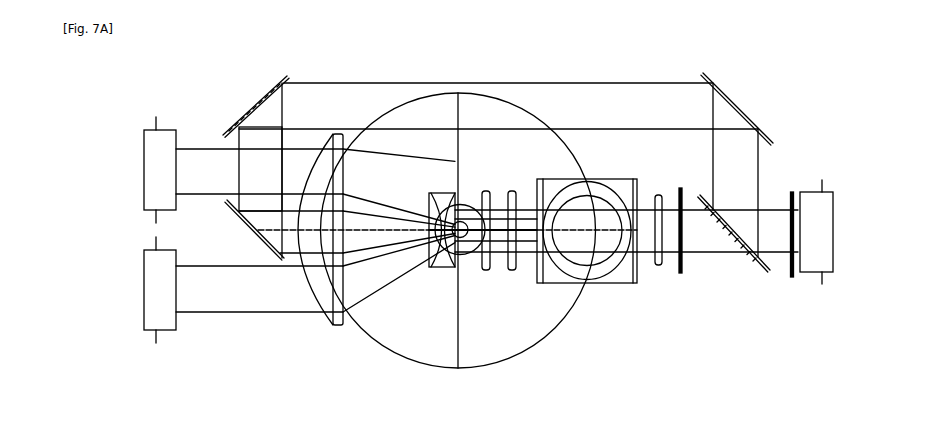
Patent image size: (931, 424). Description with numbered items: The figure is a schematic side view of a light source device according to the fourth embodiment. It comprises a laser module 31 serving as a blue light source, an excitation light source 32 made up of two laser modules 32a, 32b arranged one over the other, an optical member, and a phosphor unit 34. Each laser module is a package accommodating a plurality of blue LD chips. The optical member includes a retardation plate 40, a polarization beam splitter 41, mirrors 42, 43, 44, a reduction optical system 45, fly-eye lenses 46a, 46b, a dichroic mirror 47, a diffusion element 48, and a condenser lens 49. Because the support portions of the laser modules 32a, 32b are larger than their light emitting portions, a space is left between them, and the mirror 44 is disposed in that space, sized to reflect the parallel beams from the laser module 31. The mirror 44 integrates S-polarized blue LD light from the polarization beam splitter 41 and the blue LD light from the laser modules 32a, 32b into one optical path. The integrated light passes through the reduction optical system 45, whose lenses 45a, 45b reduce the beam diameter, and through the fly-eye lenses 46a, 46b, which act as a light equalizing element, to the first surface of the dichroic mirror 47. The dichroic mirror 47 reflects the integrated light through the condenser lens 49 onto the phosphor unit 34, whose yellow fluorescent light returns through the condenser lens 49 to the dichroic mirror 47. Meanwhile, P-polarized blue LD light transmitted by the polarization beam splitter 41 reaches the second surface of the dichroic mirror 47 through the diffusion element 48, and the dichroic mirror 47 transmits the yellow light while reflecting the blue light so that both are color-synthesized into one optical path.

The laser module 31 is at (833, 193).
The excitation light source 32 is at (88, 193).
The laser module 32a is at (144, 200).
The laser module 32b is at (144, 258).
The phosphor unit 34 is at (563, 318).
The retardation plate 40 is at (792, 279).
The polarization beam splitter 41 is at (768, 270).
The mirror 42 is at (737, 103).
The mirror 43 is at (250, 115).
The mirror 44 is at (237, 214).
The reduction optical system 45 is at (320, 372).
The lens 45a is at (335, 325).
The lens 45b is at (433, 268).
The fly-eye lens 46a is at (485, 271).
The fly-eye lens 46b is at (512, 271).
The dichroic mirror 47 is at (620, 179).
The diffusion element 48 is at (659, 195).
The condenser lens 49 is at (612, 272).